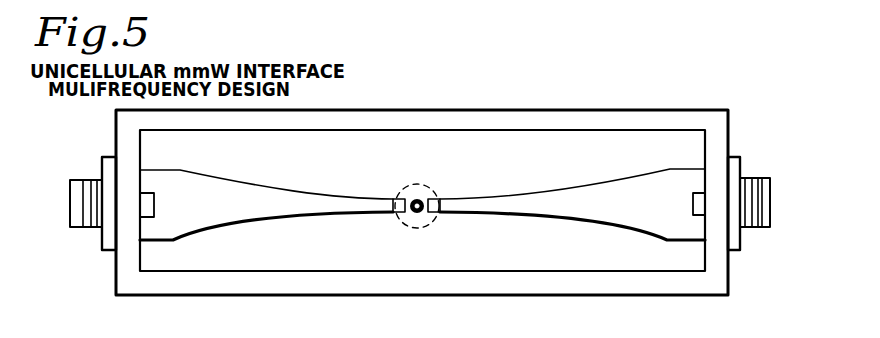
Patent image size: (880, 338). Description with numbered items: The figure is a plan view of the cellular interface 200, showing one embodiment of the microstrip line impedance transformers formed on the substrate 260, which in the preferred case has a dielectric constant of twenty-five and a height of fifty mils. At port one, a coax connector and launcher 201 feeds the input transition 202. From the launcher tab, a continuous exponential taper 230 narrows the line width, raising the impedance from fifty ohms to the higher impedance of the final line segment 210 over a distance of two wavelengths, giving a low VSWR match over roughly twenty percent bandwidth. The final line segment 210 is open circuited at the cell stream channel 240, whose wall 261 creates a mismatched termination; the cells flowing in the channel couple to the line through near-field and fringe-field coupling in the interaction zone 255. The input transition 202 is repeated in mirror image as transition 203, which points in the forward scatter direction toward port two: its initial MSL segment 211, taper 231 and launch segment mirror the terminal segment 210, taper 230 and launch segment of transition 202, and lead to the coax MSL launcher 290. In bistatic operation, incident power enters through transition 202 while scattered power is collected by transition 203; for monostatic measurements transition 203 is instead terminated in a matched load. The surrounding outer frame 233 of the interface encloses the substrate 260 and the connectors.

The cellular interface 200 is at (572, 85).
The coax launcher 201 is at (77, 178).
The input transition 202 is at (406, 168).
The transition 203 is at (675, 168).
The final line segment 210 is at (392, 211).
The initial MSL segment 211 is at (440, 211).
The continuous exponential taper 230 is at (266, 216).
The taper 231 is at (616, 216).
The housing 233 is at (643, 288).
The cell stream channel 240 is at (415, 198).
The interaction zone 255 is at (428, 229).
The substrate 260 is at (250, 262).
The wall 261 is at (421, 198).
The coax MSL launcher 290 is at (778, 167).